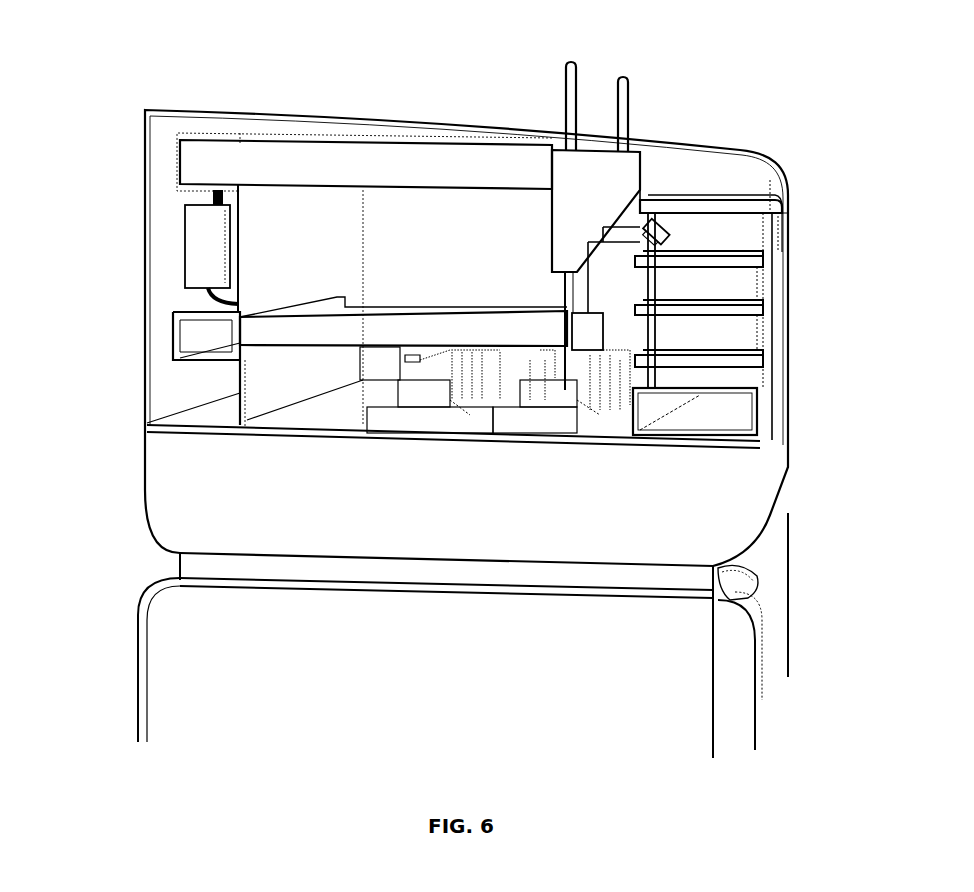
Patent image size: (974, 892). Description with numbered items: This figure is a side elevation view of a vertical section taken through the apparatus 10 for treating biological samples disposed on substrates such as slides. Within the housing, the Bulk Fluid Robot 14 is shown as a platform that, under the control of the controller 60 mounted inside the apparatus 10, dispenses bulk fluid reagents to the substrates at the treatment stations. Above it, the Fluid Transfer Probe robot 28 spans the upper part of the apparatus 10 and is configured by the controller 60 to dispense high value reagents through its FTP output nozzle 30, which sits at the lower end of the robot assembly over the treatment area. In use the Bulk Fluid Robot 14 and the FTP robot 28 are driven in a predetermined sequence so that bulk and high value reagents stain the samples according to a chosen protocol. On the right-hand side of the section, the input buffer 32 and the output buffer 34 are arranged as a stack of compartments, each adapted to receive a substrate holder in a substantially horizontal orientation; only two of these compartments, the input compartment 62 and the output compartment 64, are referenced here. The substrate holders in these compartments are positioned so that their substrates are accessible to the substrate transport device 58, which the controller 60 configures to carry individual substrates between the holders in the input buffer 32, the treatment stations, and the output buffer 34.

The apparatus 10 is at (97, 100).
The Fluid Transfer Probe (FTP) robot 28 is at (383, 135).
The Bulk Fluid Robot (BFR) 14 is at (441, 302).
The controller 60 is at (185, 232).
The FTP output nozzle 30 is at (563, 380).
The input buffer 32 is at (758, 197).
The output buffer 34 is at (784, 199).
The output compartment 64 is at (784, 268).
The input compartment 62 is at (712, 290).
The substrate transport device 58 is at (672, 245).